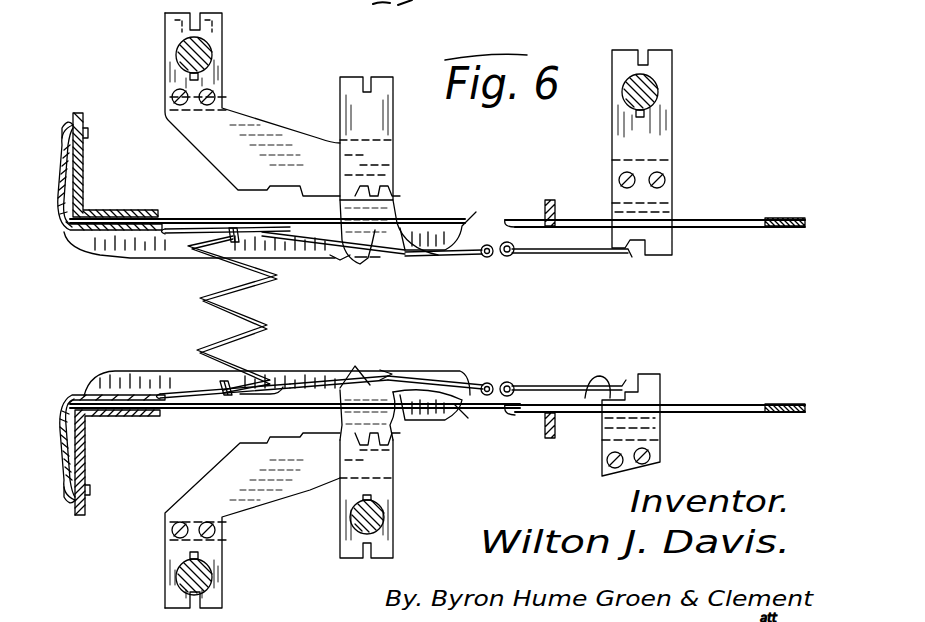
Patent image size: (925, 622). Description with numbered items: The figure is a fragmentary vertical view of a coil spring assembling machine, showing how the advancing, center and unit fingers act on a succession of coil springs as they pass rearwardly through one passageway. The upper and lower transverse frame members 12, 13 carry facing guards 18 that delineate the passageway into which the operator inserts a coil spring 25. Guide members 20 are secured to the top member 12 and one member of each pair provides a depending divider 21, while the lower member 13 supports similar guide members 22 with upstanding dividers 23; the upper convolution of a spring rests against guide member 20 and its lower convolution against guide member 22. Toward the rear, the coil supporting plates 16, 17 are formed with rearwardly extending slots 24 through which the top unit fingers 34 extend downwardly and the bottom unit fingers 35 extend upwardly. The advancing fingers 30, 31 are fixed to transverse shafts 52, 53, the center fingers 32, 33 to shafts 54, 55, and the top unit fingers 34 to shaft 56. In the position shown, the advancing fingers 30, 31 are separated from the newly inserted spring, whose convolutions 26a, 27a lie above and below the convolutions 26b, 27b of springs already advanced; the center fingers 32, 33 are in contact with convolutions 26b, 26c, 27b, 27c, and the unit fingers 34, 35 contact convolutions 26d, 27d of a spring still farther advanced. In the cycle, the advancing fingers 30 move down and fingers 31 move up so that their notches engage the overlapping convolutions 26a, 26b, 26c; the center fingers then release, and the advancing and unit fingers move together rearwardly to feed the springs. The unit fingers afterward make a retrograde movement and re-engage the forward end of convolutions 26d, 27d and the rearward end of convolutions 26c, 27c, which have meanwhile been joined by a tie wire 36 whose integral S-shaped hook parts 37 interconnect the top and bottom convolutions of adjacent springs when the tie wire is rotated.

The transverse frame member 12 is at (85, 182).
The transverse frame member 13 is at (87, 457).
The coil supporting plate 16 is at (785, 230).
The coil supporting plate 17 is at (783, 402).
The facing guard 18 is at (58, 185).
The guide member 20 is at (186, 217).
The depending divider 21 is at (128, 256).
The guide member 22 is at (185, 409).
The upstanding divider 23 is at (135, 370).
The slot 24 is at (735, 220).
The coil spring 25 is at (259, 290).
The upper convolution 26a is at (178, 240).
The upper convolution 26b is at (330, 260).
The upper convolution 26c is at (462, 258).
The upper convolution 26d is at (590, 256).
The lower convolution 27a is at (200, 393).
The lower convolution 27b is at (335, 378).
The lower convolution 27c is at (460, 378).
The lower convolution 27d is at (560, 380).
The advancing finger 30 is at (246, 125).
The advancing finger 31 is at (270, 490).
The center finger 32 is at (395, 200).
The center finger 33 is at (385, 425).
The unit finger 34 is at (665, 145).
The unit finger 35 is at (655, 432).
The tie wire 36 is at (487, 244).
The S-shaped hook part 37 is at (512, 262).
The transverse shaft 52 is at (178, 50).
The transverse shaft 53 is at (178, 573).
The transverse shaft 54 is at (358, 115).
The transverse shaft 55 is at (352, 525).
The transverse shaft 56 is at (622, 93).